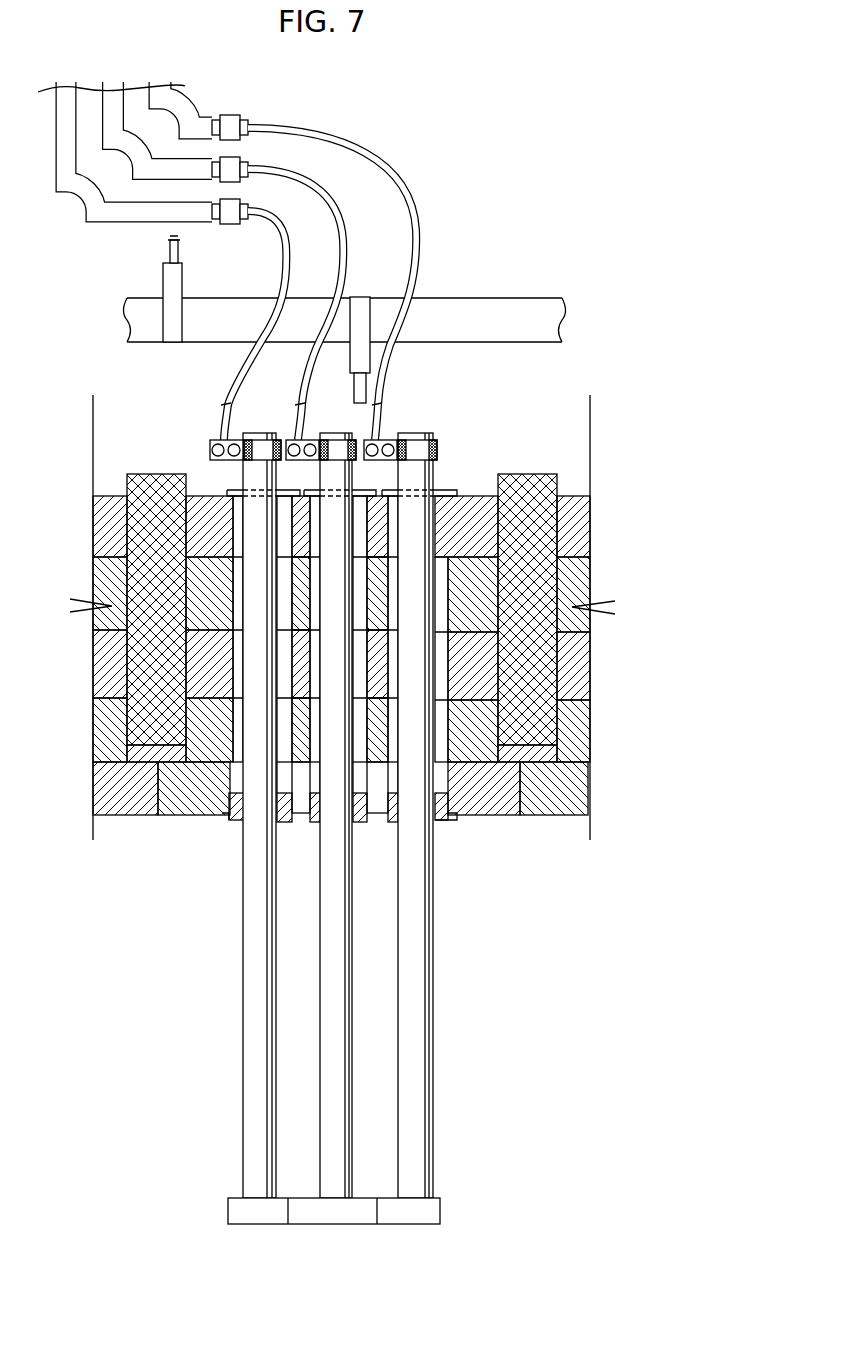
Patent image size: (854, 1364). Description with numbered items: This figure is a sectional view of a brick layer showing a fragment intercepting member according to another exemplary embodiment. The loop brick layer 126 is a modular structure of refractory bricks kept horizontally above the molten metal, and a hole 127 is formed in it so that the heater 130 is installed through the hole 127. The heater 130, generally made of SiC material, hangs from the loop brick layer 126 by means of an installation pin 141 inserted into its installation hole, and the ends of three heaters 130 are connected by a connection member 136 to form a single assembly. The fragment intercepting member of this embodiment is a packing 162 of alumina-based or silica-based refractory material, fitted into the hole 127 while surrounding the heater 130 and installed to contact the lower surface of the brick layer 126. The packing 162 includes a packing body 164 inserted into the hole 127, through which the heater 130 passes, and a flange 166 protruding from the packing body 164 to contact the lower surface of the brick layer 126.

The installation pin 141 is at (455, 490).
The hole 127 is at (238, 770).
The flange 166 is at (242, 820).
The packing 162 is at (286, 824).
The packing body 164 is at (364, 824).
The loop brick layer 126 is at (478, 763).
The heater 130 is at (434, 1000).
The connection member 136 is at (440, 1210).